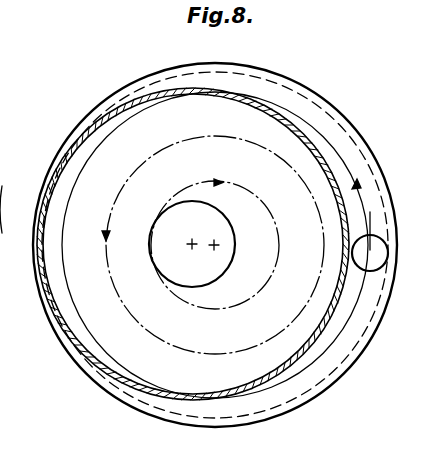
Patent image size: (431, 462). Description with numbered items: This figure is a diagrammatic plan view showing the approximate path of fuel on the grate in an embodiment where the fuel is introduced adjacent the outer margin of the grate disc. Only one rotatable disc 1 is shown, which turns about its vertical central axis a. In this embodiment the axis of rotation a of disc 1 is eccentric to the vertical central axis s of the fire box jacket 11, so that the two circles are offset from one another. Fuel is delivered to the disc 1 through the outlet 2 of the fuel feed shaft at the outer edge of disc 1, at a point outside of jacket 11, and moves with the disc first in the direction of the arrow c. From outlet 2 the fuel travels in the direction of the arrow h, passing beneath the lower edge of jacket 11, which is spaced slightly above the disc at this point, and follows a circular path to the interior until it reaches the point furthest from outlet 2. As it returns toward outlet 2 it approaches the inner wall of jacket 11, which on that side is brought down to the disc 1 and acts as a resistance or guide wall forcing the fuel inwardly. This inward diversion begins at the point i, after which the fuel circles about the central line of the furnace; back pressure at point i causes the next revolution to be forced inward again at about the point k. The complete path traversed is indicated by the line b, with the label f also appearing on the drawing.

The rotatable disc 1 is at (328, 373).
The outlet of the fuel feed shaft 2 is at (373, 270).
The fire box jacket 11 is at (305, 133).
The axis of rotation of disc a is at (213, 243).
The path line of the fuel b is at (84, 318).
The arrow of initial fuel direction c is at (4, 284).
The fluid passage f is at (183, 273).
The arrow of fuel movement direction h is at (360, 190).
The point of inward diversion i is at (157, 120).
The point of further inward diversion k is at (243, 163).
The vertical central axis of fire box jacket s is at (190, 246).